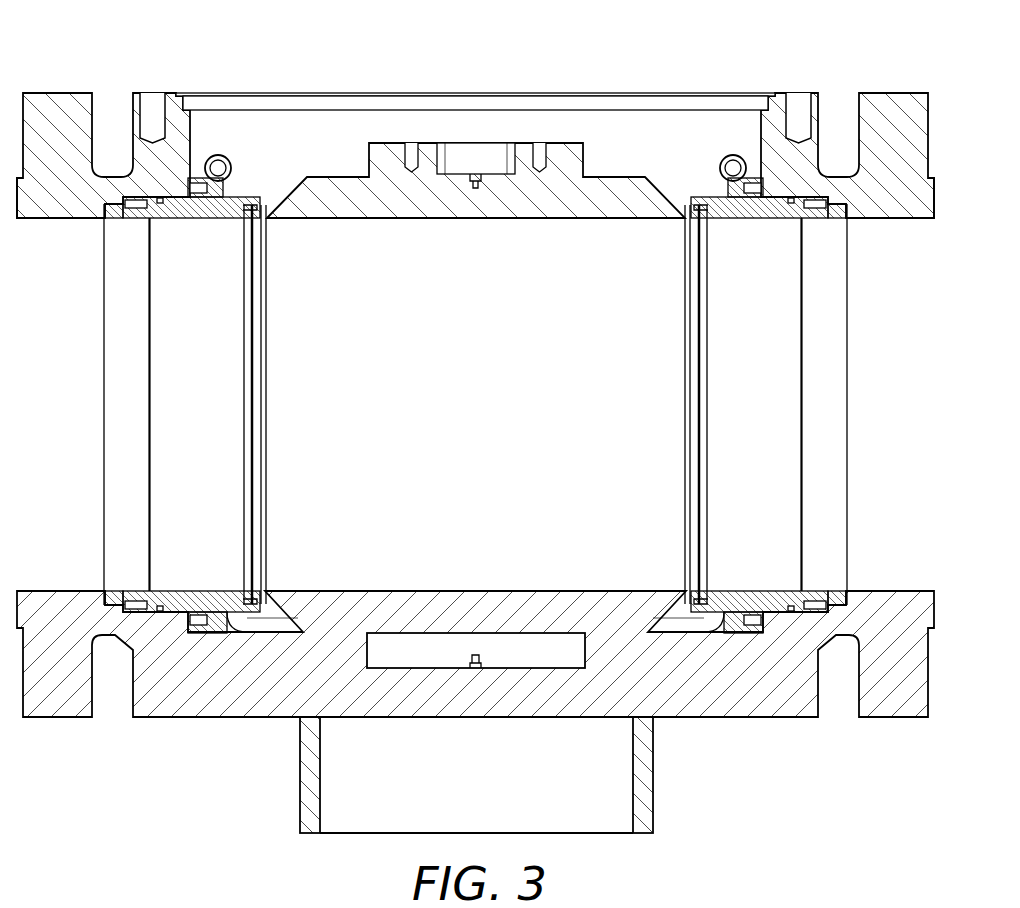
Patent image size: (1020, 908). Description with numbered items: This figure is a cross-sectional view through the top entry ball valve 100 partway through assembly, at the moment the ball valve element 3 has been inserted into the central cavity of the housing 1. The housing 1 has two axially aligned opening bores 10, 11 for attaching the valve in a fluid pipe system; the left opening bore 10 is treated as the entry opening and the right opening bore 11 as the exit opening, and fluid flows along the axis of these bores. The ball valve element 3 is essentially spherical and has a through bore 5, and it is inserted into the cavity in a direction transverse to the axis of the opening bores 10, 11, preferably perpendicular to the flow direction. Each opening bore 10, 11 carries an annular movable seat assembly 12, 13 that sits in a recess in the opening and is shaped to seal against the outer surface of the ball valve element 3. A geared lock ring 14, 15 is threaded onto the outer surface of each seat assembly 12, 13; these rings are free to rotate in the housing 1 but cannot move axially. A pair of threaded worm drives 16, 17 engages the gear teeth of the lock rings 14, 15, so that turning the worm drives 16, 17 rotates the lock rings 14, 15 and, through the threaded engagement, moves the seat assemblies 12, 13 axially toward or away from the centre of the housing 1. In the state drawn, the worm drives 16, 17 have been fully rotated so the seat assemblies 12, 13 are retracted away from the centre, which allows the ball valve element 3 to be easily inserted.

The top entry ball valve 100 is at (83, 62).
The housing 1 is at (748, 718).
The ball valve element 3 is at (622, 180).
The through bore 5 is at (550, 220).
The opening bore 10 is at (45, 220).
The opening bore 11 is at (904, 220).
The seat assembly 12 is at (200, 220).
The seat assembly 13 is at (752, 220).
The geared lock ring 14 is at (227, 186).
The geared lock ring 15 is at (724, 186).
The threaded worm drive 16 is at (218, 155).
The threaded worm drive 17 is at (733, 155).